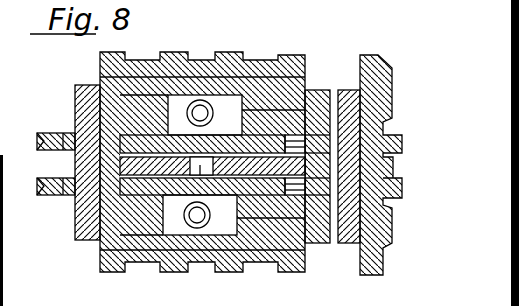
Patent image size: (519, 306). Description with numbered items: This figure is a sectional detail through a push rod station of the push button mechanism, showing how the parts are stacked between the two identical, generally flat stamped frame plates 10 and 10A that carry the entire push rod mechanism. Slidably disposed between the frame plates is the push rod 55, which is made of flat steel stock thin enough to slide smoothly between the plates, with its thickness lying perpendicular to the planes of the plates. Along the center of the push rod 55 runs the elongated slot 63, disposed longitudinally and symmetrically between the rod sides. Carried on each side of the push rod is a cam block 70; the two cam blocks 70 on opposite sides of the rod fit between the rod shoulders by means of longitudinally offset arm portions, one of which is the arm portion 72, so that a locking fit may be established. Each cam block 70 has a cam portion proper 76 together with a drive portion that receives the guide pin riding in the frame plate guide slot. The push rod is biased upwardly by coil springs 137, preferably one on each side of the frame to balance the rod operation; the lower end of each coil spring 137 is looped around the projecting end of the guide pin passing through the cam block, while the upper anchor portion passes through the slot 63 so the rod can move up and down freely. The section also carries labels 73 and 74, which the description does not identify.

The frame plate 10 is at (52, 142).
The frame plate 10A is at (57, 192).
The push rod 55 is at (245, 150).
The elongated slot 63 is at (228, 174).
The cam block 70 is at (204, 161).
The arm portion 72 is at (50, 110).
The bearing ring 73 is at (113, 105).
The seal 74 is at (75, 110).
The cam portion proper 76 is at (183, 165).
The coil spring 137 is at (196, 262).